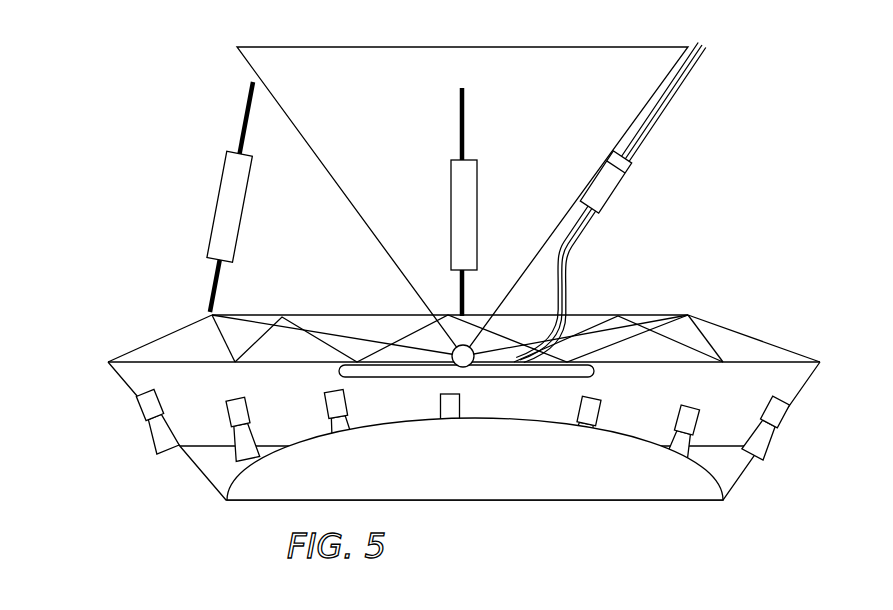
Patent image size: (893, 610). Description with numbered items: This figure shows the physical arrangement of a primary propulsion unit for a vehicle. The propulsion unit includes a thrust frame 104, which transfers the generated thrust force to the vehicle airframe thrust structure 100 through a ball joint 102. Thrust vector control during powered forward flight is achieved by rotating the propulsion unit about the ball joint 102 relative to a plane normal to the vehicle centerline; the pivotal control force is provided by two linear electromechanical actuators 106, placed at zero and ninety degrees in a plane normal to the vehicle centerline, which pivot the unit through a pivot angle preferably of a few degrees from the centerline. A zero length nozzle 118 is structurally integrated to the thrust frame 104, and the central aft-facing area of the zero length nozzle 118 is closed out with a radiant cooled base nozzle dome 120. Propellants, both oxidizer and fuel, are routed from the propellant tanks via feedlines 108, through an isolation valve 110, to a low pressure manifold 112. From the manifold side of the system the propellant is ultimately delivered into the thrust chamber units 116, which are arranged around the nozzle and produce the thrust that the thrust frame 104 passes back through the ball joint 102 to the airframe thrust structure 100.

The vehicle airframe thrust structure 100 is at (371, 92).
The ball joint 102 is at (428, 377).
The thrust frame 104 is at (173, 338).
The linear electromechanical actuators 106 is at (228, 190).
The feedlines 108 is at (660, 126).
The isolation valve 110 is at (607, 194).
The low pressure manifold 112 is at (503, 370).
The thrust chamber units 116 is at (160, 435).
The zero length nozzle 118 is at (215, 470).
The base nozzle dome 120 is at (497, 478).